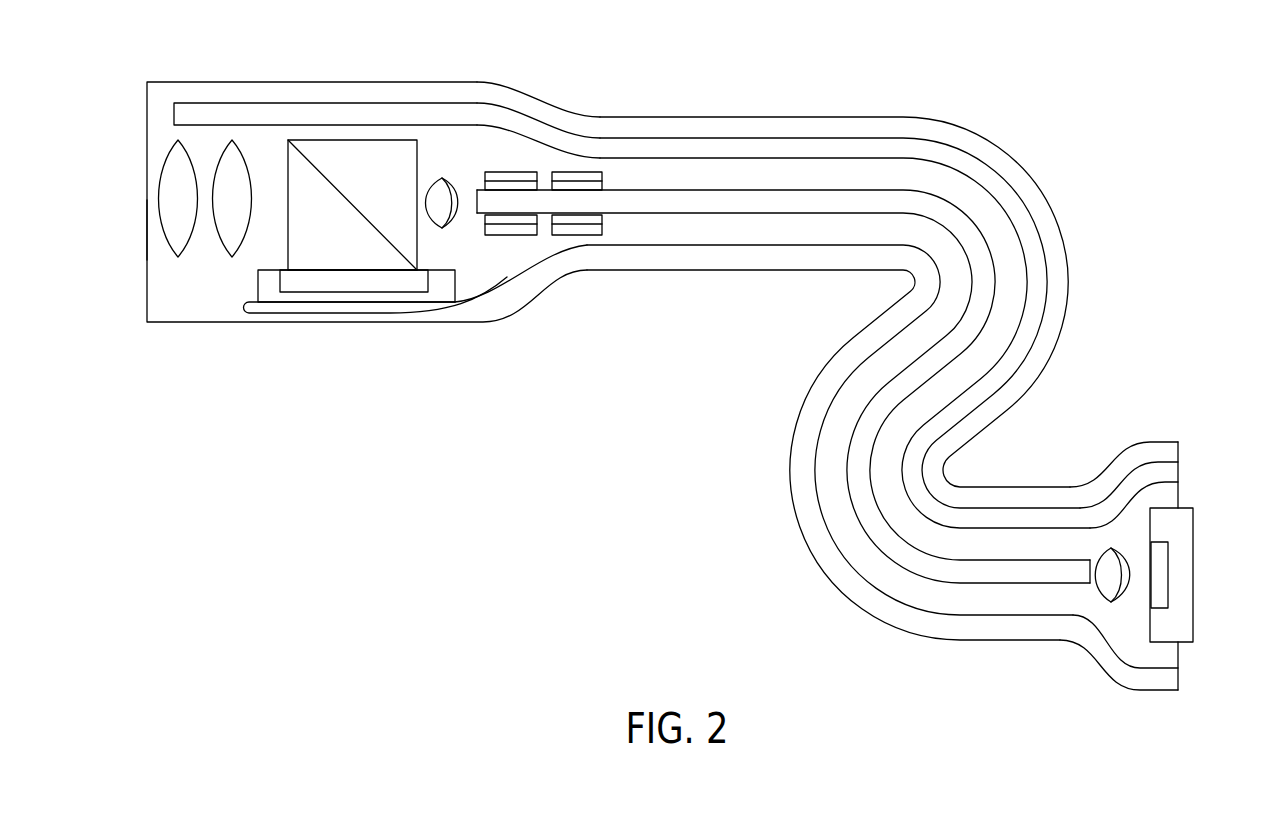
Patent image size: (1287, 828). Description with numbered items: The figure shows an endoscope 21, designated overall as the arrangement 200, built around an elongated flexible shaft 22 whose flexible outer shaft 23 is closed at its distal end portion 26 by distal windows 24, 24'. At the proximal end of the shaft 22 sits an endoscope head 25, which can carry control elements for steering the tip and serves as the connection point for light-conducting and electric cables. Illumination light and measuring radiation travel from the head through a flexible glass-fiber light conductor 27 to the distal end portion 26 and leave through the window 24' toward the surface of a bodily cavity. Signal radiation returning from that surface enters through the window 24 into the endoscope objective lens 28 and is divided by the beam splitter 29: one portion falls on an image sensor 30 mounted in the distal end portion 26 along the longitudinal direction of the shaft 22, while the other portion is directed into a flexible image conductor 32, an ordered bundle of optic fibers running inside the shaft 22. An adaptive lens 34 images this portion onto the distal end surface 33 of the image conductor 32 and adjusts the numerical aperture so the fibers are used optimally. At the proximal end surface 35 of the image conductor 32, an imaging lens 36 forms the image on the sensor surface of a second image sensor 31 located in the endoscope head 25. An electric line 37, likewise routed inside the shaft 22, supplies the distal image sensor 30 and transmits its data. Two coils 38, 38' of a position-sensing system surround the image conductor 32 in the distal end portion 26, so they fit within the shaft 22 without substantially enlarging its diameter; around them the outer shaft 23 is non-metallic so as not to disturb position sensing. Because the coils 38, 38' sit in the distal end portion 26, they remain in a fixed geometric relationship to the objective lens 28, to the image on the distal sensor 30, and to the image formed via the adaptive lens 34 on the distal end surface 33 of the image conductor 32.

The optical connector assembly 200 is at (1162, 90).
The endoscope 21 is at (518, 375).
The elongated flexible shaft 22 is at (715, 285).
The flexible outer shaft 23 is at (1068, 288).
The distal window 24 is at (111, 230).
The distal window 24' is at (338, 128).
The endoscope head 25 is at (1168, 402).
The distal end portion 26 is at (321, 375).
The light conductor 27 is at (735, 147).
The endoscope objective lens 28 is at (196, 292).
The beam splitter 29 is at (345, 158).
The image sensor 30 is at (383, 287).
The image sensor 31 is at (1155, 582).
The flexible image conductor 32 is at (672, 198).
The distal end surface 33 is at (470, 192).
The adaptive lens 34 is at (442, 172).
The proximal end surface 35 is at (1093, 590).
The imaging lens 36 is at (1115, 622).
The electric line 37 is at (663, 247).
The coil 38 is at (512, 130).
The coil 38' is at (583, 140).